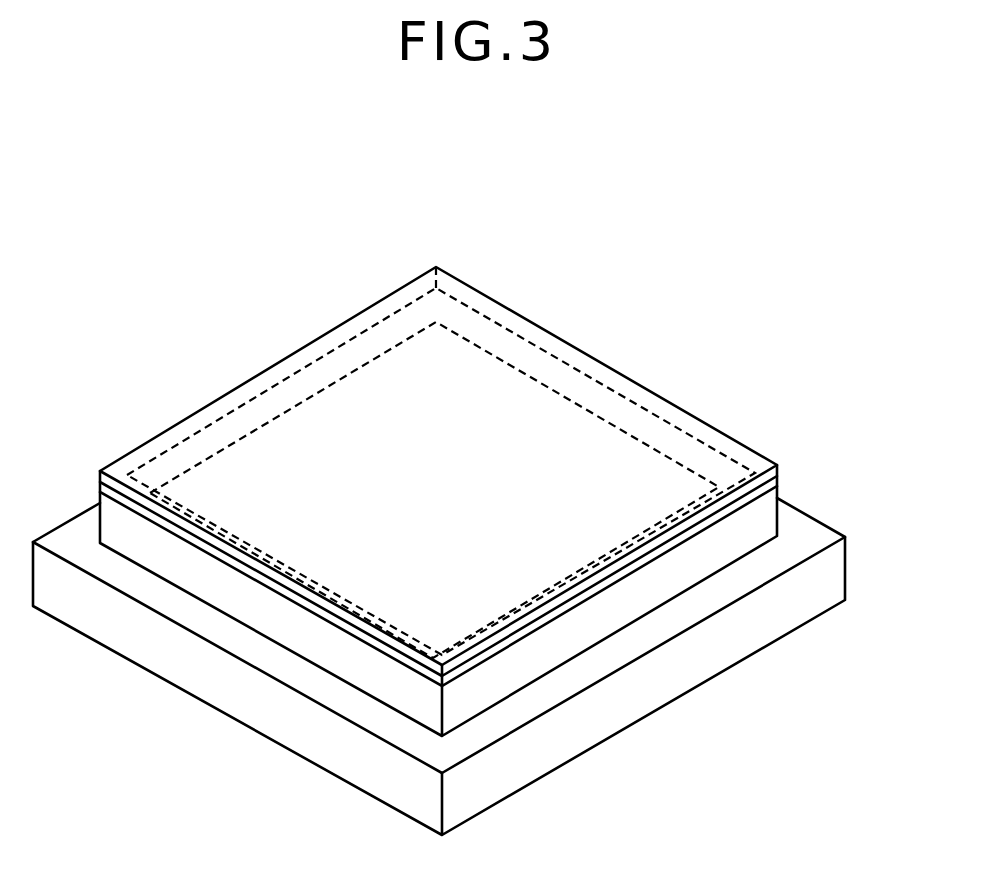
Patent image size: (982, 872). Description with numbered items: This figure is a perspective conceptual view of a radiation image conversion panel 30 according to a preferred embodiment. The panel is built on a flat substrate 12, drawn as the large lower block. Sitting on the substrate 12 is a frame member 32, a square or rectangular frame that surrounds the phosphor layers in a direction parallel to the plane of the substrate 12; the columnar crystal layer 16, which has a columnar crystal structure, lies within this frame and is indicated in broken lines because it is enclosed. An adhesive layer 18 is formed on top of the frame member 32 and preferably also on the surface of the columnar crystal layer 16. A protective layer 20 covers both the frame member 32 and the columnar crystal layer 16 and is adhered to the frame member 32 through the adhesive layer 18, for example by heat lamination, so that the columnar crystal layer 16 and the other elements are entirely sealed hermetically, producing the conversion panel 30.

The substrate 12 is at (725, 642).
The columnar crystal layer 16 is at (557, 452).
The adhesive layer 18 is at (780, 490).
The protective layer 20 is at (770, 477).
The conversion panel 30 is at (492, 478).
The frame member 32 is at (570, 635).